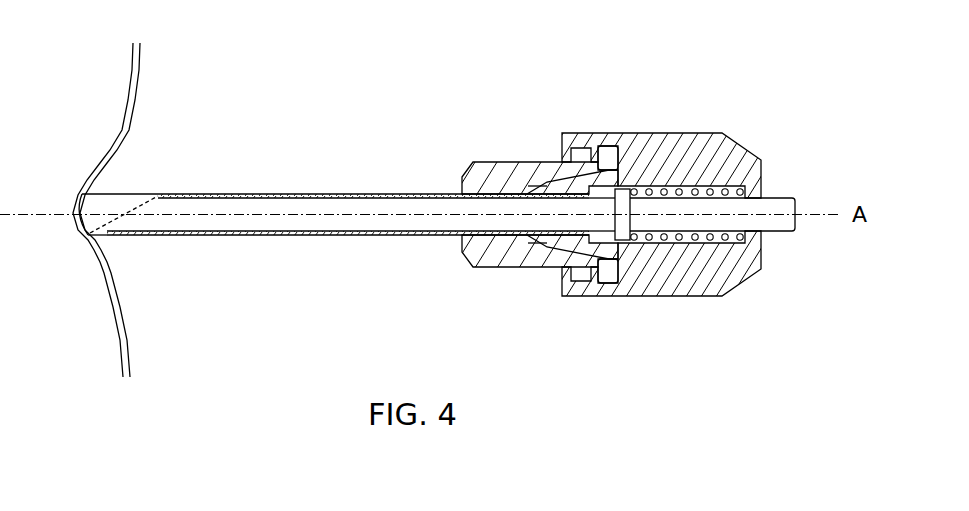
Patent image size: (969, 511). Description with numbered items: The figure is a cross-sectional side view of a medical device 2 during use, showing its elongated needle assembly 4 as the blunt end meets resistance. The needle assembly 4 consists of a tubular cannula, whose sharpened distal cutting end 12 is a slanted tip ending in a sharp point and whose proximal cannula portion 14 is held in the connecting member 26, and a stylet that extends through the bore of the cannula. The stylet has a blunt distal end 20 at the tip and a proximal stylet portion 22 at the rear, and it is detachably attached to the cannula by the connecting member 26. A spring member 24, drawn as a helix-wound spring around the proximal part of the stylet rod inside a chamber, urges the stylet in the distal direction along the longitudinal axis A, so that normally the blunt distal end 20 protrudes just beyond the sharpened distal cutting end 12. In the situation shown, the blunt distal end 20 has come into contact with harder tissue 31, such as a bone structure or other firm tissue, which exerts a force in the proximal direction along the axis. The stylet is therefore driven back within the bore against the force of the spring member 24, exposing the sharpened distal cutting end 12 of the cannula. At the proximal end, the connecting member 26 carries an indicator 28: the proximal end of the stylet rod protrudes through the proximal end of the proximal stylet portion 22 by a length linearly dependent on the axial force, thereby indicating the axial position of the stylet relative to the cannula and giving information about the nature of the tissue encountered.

The medical device 2 is at (790, 75).
The needle assembly 4 is at (462, 115).
The sharpened distal cutting end 12 is at (137, 212).
The proximal cannula portion 14 is at (472, 177).
The blunt distal end 20 is at (97, 212).
The proximal stylet portion 22 is at (697, 147).
The spring member 24 is at (726, 186).
The connecting member 26 is at (611, 147).
The indicator 28 is at (778, 208).
The harder tissue 31 is at (137, 85).